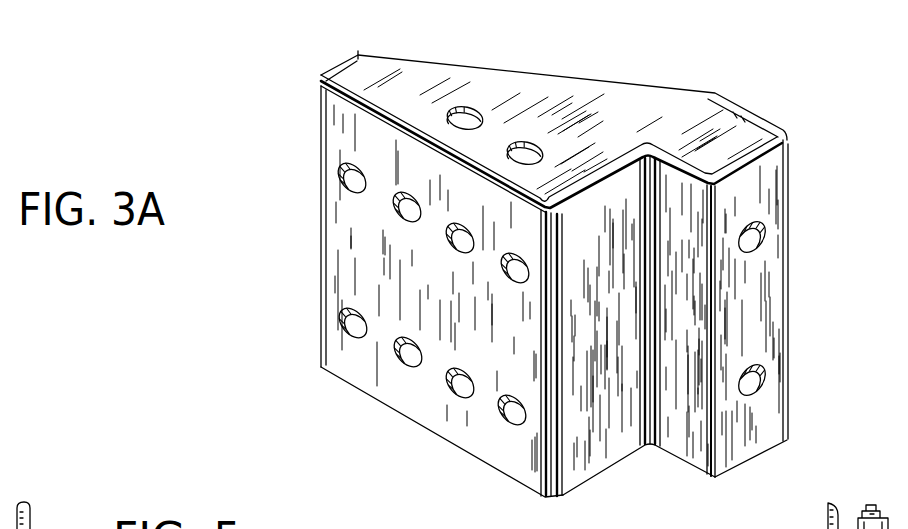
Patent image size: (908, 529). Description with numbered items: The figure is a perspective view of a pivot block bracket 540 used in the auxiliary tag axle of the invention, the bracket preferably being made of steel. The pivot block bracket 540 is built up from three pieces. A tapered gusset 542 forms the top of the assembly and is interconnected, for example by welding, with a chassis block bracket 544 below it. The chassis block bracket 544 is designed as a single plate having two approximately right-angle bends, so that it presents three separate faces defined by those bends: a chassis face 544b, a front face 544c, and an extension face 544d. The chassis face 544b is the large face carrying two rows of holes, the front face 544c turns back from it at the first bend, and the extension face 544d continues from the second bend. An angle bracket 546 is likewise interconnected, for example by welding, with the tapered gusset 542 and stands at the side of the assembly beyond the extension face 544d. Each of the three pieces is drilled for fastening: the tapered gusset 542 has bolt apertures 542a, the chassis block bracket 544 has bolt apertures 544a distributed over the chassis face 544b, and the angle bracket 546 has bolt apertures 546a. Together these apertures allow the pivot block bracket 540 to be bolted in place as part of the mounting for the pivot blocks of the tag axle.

The pivot block bracket 540 is at (755, 83).
The tapered gusset 542 is at (675, 110).
The bolt apertures 542a is at (530, 140).
The chassis block bracket 544 is at (333, 308).
The bolt apertures 544a is at (403, 370).
The chassis face 544b is at (450, 289).
The front face 544c is at (593, 458).
The extension face 544d is at (697, 443).
The angle bracket 546 is at (763, 440).
The bolt apertures 546a is at (760, 365).